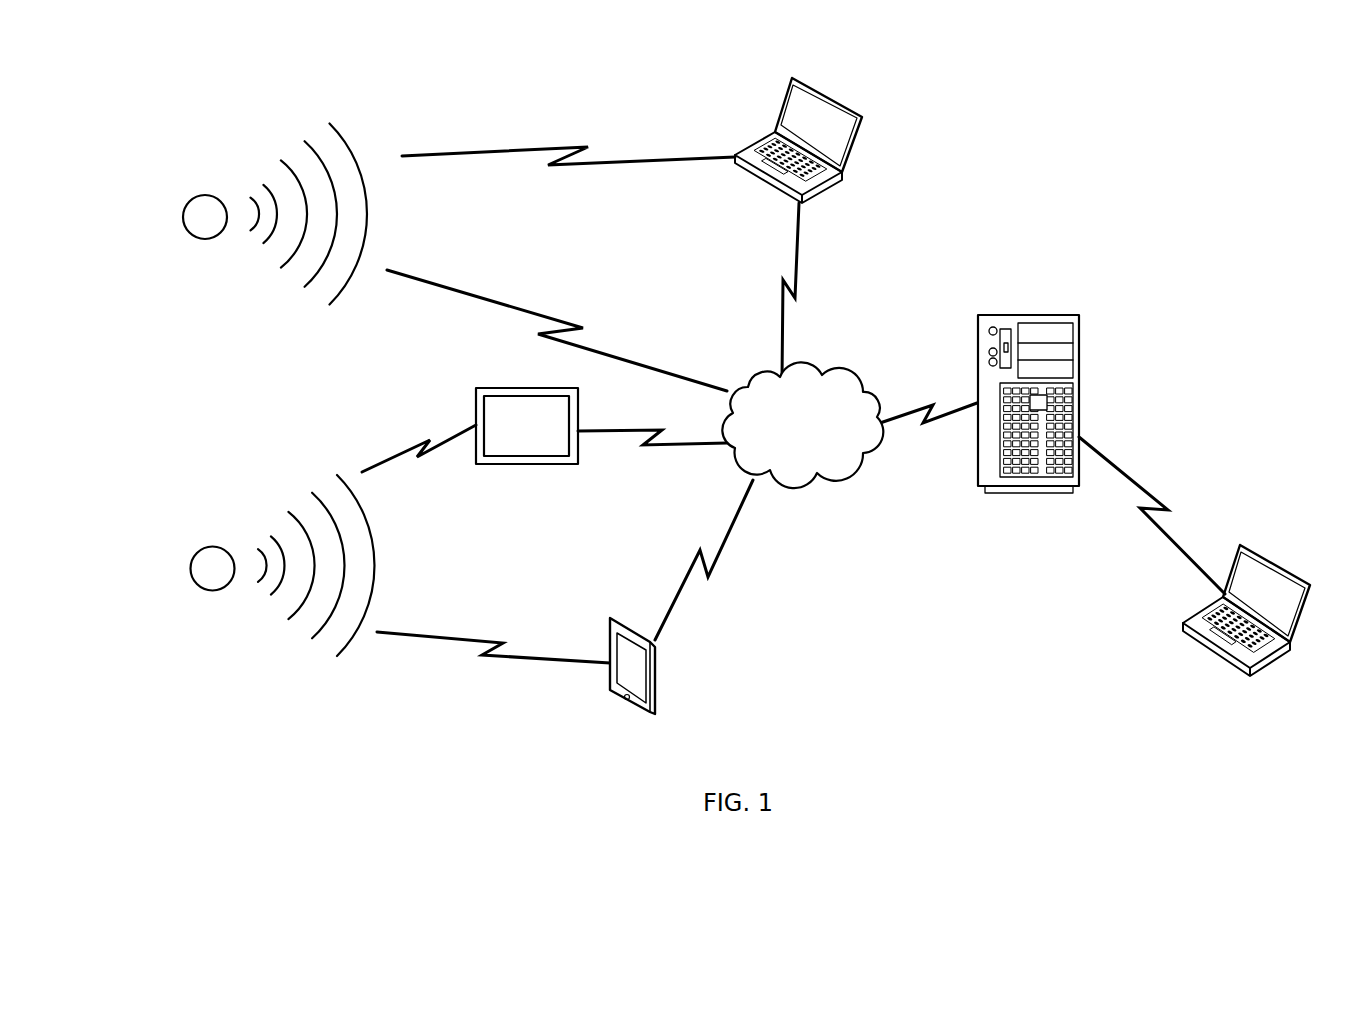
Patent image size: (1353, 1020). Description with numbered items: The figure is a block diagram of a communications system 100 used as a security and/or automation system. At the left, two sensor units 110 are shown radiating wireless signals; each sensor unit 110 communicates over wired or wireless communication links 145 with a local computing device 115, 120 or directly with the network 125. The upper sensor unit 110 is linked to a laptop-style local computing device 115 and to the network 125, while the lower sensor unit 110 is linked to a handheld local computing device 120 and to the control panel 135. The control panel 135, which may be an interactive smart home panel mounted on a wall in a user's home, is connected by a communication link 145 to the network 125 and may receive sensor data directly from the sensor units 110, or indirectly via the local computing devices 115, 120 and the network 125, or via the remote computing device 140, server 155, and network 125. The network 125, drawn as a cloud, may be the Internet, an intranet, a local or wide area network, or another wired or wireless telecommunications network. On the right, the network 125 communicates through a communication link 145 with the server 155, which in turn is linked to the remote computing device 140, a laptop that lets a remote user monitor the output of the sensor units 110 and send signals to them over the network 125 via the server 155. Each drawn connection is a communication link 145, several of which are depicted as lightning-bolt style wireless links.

The communications system 100 is at (212, 762).
The sensor unit 110 is at (205, 239).
The local computing device 115 is at (773, 192).
The local computing device 120 is at (622, 705).
The network 125 is at (825, 365).
The control panel 135 is at (530, 464).
The remote computing device 140 is at (1217, 658).
The communication link 145 is at (508, 148).
The server 155 is at (1048, 315).